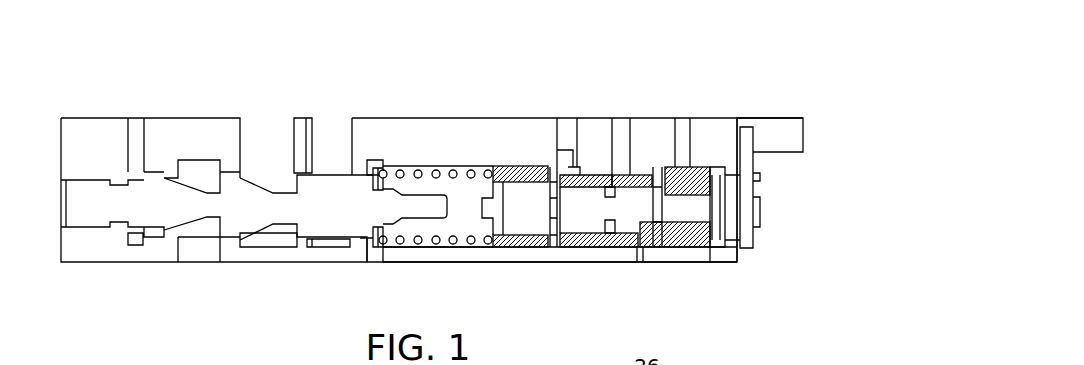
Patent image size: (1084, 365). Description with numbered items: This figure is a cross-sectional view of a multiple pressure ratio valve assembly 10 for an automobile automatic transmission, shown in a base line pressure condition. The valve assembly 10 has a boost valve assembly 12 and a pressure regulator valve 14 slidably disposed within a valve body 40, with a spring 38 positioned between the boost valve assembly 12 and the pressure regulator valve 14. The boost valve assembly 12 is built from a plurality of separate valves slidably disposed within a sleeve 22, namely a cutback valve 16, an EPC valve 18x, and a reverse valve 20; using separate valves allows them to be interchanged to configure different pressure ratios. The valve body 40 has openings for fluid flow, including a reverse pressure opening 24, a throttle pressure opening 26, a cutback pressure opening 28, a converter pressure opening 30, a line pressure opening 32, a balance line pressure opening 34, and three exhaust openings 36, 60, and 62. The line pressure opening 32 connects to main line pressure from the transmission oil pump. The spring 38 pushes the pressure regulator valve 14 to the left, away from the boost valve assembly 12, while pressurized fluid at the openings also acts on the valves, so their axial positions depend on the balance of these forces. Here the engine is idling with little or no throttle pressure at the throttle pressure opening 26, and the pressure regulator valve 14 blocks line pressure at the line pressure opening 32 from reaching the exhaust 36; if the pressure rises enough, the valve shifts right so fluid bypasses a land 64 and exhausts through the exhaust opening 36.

The multiple pressure ratio valve assembly 10 is at (754, 35).
The boost valve assembly 12 is at (583, 276).
The pressure regulator valve 14 is at (316, 218).
The cutback valve 16 is at (522, 207).
The EPC valve 18x is at (620, 212).
The reverse valve 20 is at (692, 212).
The sleeve 22 is at (712, 183).
The reverse pressure opening 24 is at (685, 116).
The throttle pressure opening 26 is at (621, 116).
The cutback pressure opening 28 is at (566, 116).
The converter pressure opening 30 is at (332, 126).
The line pressure opening 32 is at (269, 126).
The balance line pressure opening 34 is at (136, 125).
The exhaust opening 36 is at (202, 250).
The spring 38 is at (401, 166).
The valve body 40 is at (719, 140).
The exhaust opening 60 is at (374, 253).
The exhaust opening 62 is at (657, 258).
The land 64 is at (237, 217).